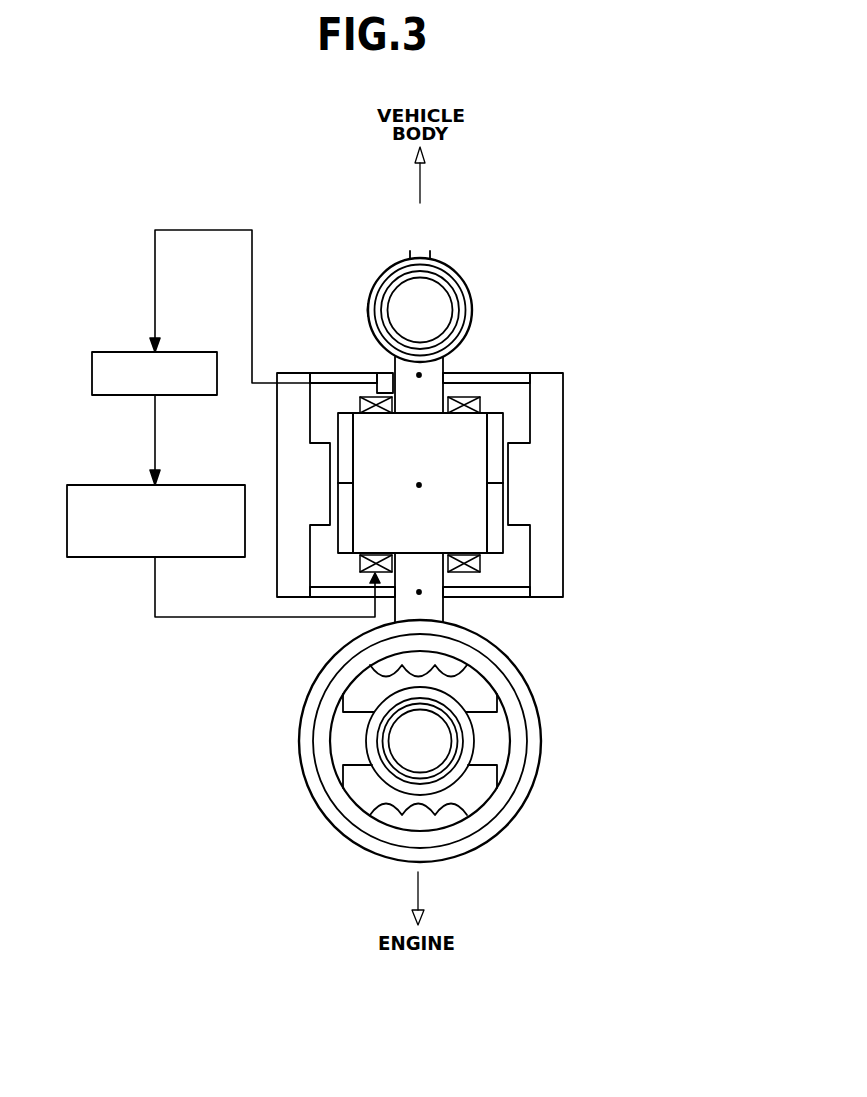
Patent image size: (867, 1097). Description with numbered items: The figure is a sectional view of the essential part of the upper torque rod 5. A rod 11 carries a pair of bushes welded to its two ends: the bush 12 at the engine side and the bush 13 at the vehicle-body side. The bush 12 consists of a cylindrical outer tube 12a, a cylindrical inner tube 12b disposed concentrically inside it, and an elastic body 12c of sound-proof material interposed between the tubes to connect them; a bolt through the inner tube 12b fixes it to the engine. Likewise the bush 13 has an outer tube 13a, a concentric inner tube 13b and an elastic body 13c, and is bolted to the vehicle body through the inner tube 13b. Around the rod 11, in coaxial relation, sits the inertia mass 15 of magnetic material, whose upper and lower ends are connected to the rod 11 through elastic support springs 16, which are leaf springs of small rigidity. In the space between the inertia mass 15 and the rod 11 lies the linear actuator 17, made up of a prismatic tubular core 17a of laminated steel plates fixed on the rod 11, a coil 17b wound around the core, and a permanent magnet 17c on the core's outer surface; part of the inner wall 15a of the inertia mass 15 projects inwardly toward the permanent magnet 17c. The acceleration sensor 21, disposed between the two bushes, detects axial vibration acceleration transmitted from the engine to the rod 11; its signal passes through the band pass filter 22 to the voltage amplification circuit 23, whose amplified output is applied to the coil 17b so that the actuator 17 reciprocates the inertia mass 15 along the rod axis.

The upper torque rod 5 is at (585, 298).
The rod 11 is at (436, 368).
The bush 12 is at (633, 703).
The outer tube 12a is at (532, 716).
The inner tube 12b is at (438, 748).
The elastic body 12c is at (487, 727).
The bush 13 is at (491, 201).
The outer tube 13a is at (468, 290).
The inner tube 13b is at (438, 293).
The elastic body 13c is at (450, 285).
The inertia mass 15 is at (554, 409).
The inner wall 15a is at (528, 539).
The elastic support spring 16 is at (482, 375).
The actuator 17 is at (368, 315).
The core 17a is at (370, 423).
The coil 17b is at (377, 375).
The permanent magnet 17c is at (343, 427).
The acceleration sensor 21 is at (370, 312).
The band pass filter 22 is at (197, 358).
The voltage amplification circuit 23 is at (197, 492).